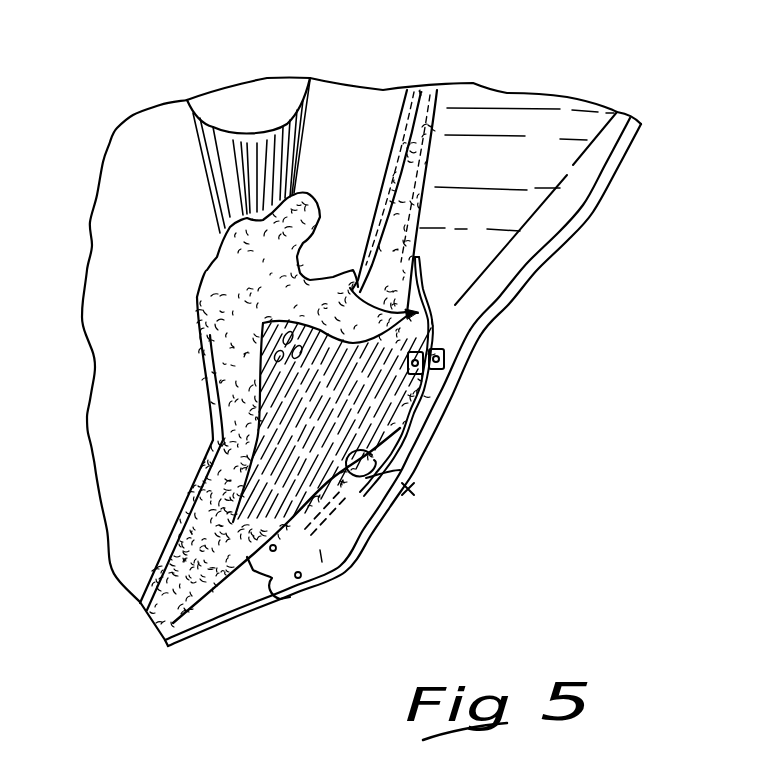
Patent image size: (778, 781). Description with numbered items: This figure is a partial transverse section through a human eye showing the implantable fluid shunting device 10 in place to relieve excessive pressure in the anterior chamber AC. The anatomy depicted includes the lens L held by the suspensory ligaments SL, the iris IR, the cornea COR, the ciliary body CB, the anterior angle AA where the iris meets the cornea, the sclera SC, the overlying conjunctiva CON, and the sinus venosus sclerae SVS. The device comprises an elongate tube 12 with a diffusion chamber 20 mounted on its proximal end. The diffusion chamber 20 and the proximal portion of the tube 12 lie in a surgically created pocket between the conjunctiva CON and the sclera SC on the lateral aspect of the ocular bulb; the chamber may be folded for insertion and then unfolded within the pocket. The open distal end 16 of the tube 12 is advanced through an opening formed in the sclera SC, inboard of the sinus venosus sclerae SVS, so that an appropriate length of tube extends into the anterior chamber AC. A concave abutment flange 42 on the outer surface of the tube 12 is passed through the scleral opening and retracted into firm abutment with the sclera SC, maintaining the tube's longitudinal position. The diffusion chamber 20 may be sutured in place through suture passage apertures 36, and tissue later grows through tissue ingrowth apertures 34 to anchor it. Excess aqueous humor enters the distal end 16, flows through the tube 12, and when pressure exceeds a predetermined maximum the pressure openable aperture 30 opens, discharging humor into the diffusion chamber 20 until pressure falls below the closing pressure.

The lens L is at (267, 100).
The suspensory ligaments SL is at (242, 152).
The iris IR is at (432, 107).
The anterior chamber AC is at (507, 153).
The cornea COR is at (636, 116).
The anterior angle AA is at (356, 293).
The ciliary body CB is at (250, 257).
The sclera SC is at (290, 505).
The conjunctiva CON is at (480, 340).
The sinus venosus sclerae SVS is at (433, 310).
The implantable fluid shunting device 10 is at (398, 446).
The elongate tube 12 is at (427, 387).
The open distal end 16 is at (417, 257).
The diffusion chamber 20 is at (380, 527).
The pressure openable aperture 30 is at (348, 522).
The tissue ingrowth apertures 34 is at (278, 550).
The suture passage apertures 36 is at (382, 470).
The concave abutment flange 42 is at (437, 296).